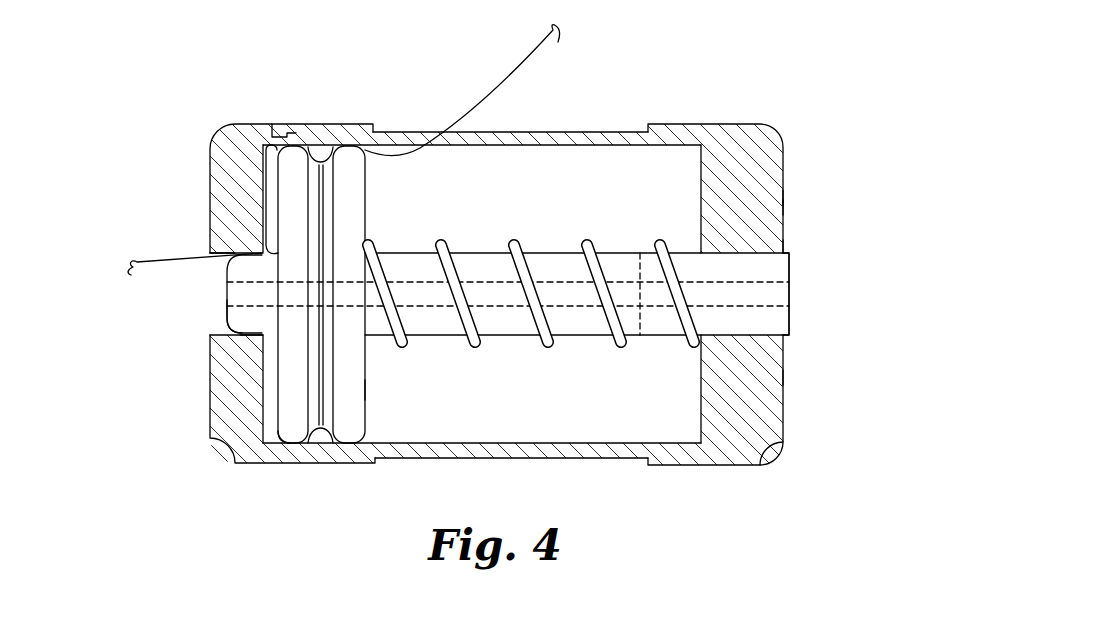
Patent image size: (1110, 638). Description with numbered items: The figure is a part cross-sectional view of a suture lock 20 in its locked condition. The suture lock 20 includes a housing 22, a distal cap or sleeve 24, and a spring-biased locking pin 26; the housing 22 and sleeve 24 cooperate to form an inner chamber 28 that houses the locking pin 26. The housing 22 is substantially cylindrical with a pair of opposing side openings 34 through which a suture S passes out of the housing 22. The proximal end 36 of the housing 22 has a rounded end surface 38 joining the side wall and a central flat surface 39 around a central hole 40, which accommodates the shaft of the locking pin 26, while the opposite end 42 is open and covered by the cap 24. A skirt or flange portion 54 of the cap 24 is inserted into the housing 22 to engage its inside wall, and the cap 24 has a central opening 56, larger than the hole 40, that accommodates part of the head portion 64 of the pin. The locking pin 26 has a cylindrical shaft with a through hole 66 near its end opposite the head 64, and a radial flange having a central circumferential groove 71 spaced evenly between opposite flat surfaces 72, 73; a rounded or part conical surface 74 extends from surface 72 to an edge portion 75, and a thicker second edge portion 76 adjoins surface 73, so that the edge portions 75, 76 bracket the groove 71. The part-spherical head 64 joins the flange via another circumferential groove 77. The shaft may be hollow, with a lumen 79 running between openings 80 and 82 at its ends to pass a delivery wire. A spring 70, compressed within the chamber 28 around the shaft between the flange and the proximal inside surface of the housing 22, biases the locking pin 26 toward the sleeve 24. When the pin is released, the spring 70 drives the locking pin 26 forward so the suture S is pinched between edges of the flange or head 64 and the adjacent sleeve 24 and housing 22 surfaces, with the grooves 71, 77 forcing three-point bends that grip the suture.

The suture lock 20 is at (822, 428).
The housing 22 is at (730, 135).
The distal cap or sleeve 24 is at (238, 142).
The locking pin 26 is at (588, 322).
The inner chamber 28 is at (603, 160).
The side openings 34 is at (443, 138).
The proximal end 36 is at (783, 198).
The rounded end surface 38 is at (770, 453).
The central flat surface 39 is at (783, 208).
The central hole 40 is at (783, 248).
The distal end 42 is at (783, 378).
The skirt or flange portion 54 is at (278, 133).
The central opening 56 is at (226, 253).
The head portion 64 is at (240, 316).
The through hole 66 is at (655, 322).
The spring 70 is at (553, 343).
The central circumferential groove 71 is at (323, 175).
The flat surface 72 is at (272, 400).
The flat surface 73 is at (365, 392).
The rounded or part conical surface 74 is at (282, 443).
The edge portion 75 is at (295, 445).
The second edge portion 76 is at (355, 443).
The circumferential groove 77 is at (262, 335).
The lumen 79 is at (230, 300).
The opening 80 is at (227, 273).
The opening 82 is at (789, 288).
The suture S is at (525, 92).